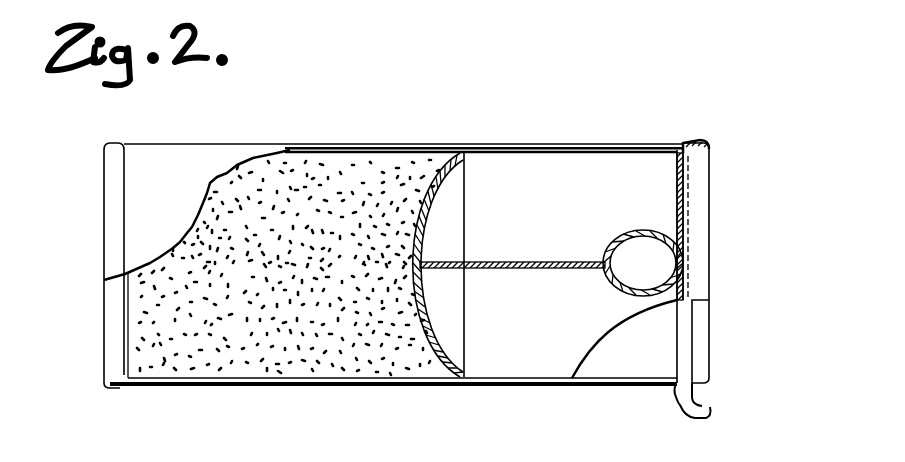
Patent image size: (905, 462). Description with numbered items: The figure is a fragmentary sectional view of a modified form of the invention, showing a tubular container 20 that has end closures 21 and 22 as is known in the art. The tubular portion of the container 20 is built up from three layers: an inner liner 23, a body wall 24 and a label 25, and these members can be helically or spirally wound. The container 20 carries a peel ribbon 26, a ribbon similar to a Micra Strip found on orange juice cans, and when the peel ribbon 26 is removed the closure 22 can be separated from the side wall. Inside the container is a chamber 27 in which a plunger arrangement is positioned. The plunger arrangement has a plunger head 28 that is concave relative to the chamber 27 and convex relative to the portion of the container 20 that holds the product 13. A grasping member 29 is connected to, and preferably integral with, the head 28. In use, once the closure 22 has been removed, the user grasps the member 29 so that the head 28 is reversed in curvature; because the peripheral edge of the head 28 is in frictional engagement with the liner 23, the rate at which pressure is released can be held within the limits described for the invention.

The product 13 is at (375, 355).
The tubular container 20 is at (445, 130).
The end closure 21 is at (104, 264).
The end closure 22 is at (710, 140).
The inner liner 23 is at (569, 153).
The body wall 24 is at (613, 146).
The label 25 is at (560, 143).
The peel ribbon 26 is at (708, 405).
The chamber 27 is at (532, 362).
The plunger head 28 is at (427, 237).
The grasping member 29 is at (530, 262).